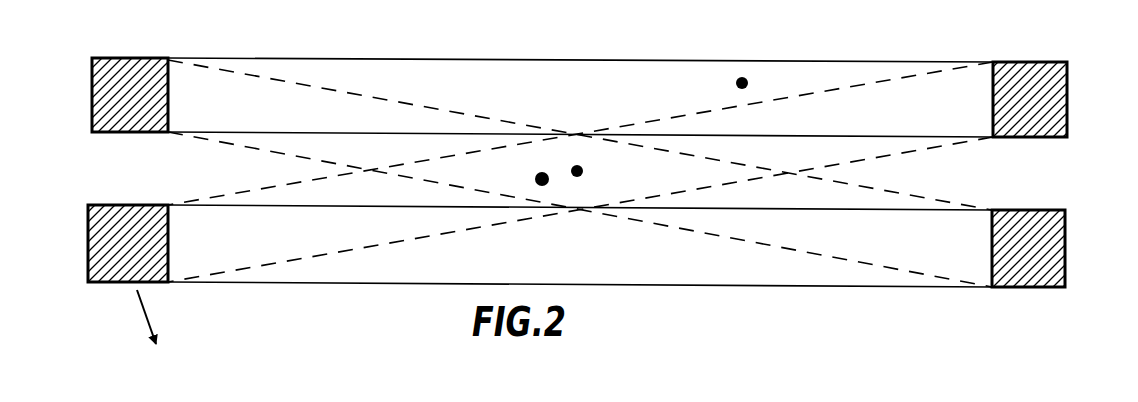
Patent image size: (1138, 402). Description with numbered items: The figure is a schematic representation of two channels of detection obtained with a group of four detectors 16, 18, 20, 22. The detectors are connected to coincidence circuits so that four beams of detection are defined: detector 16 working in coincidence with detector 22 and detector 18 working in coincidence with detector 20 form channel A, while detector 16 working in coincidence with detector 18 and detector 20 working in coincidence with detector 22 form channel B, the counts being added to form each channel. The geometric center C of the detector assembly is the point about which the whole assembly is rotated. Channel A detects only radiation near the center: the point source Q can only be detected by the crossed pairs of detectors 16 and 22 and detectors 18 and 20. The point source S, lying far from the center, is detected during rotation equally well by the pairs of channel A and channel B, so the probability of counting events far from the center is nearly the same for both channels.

The detector 16 is at (104, 82).
The detector 18 is at (1046, 74).
The detector 20 is at (103, 249).
The detector 22 is at (1046, 259).
The point source Q is at (540, 178).
The geometric center C is at (583, 171).
The point source S is at (750, 80).